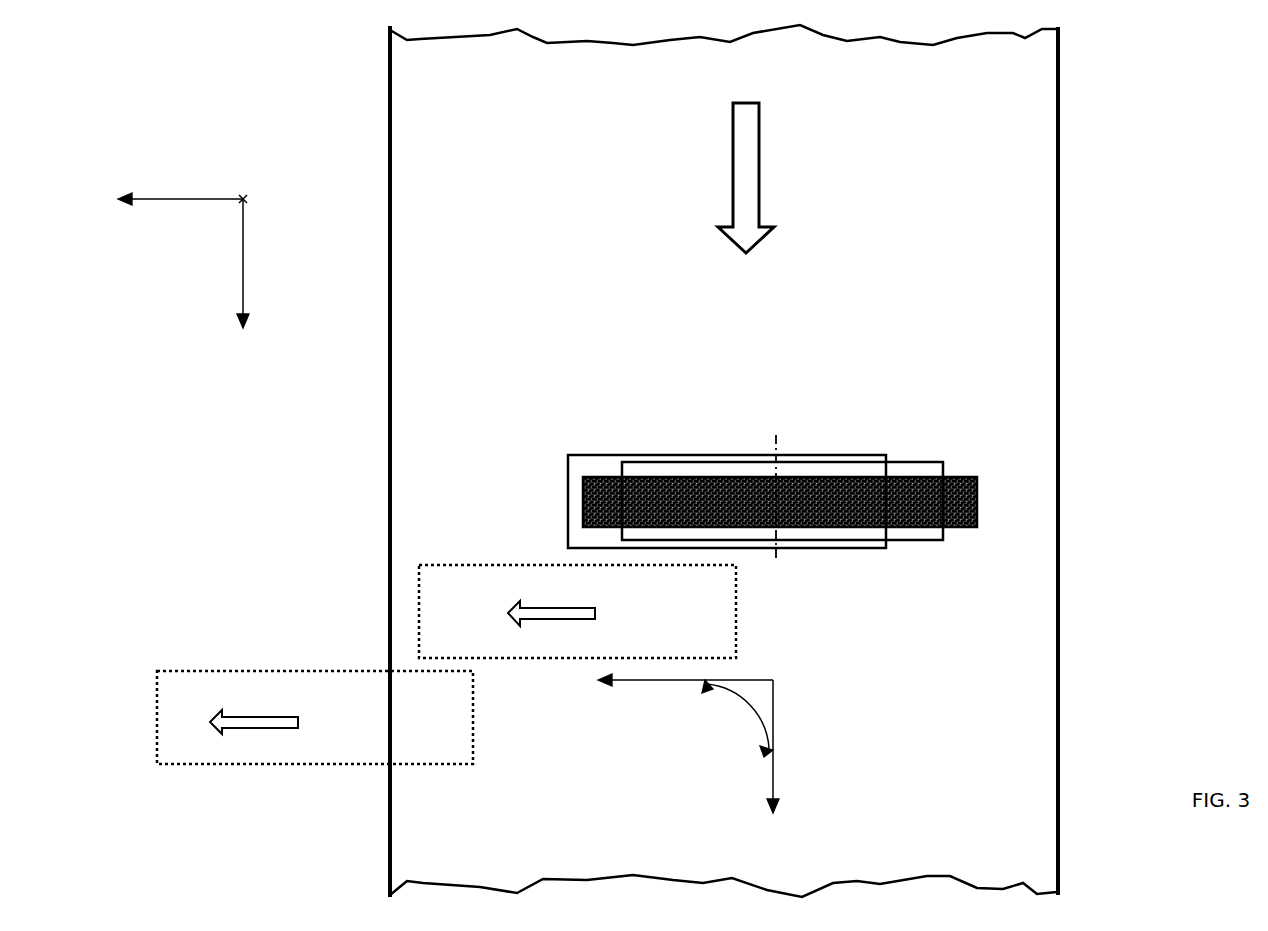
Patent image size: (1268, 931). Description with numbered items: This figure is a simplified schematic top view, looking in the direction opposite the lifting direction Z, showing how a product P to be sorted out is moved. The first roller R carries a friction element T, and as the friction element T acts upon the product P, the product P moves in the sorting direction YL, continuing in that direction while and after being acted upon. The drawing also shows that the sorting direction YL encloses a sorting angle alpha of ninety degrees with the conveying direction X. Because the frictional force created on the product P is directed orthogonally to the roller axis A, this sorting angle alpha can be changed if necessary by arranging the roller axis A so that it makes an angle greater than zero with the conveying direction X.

The product P is at (597, 462).
The first roller R is at (912, 470).
The friction element T is at (977, 508).
The roller axis A is at (781, 445).
The conveying direction X is at (243, 278).
The sorting direction YL is at (158, 197).
The lifting direction Z is at (244, 190).
The sorting angle alpha is at (685, 715).